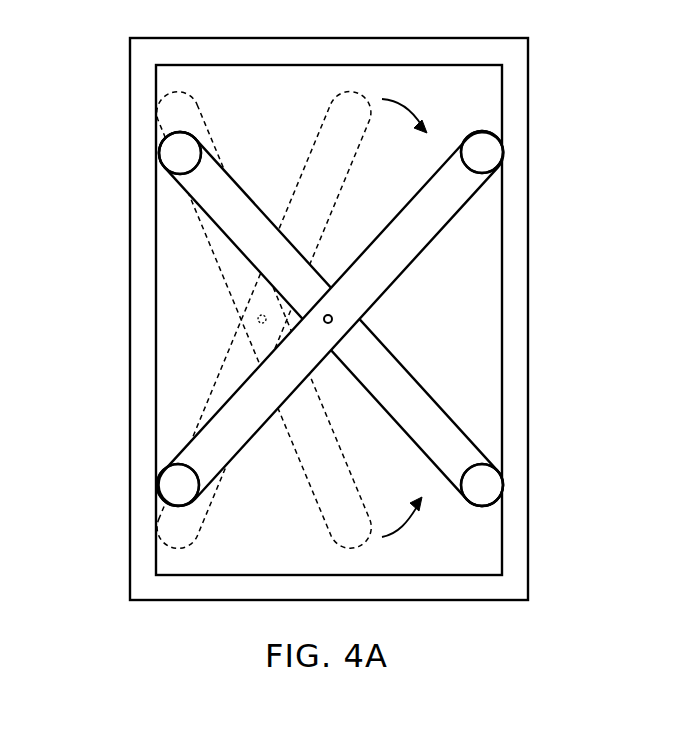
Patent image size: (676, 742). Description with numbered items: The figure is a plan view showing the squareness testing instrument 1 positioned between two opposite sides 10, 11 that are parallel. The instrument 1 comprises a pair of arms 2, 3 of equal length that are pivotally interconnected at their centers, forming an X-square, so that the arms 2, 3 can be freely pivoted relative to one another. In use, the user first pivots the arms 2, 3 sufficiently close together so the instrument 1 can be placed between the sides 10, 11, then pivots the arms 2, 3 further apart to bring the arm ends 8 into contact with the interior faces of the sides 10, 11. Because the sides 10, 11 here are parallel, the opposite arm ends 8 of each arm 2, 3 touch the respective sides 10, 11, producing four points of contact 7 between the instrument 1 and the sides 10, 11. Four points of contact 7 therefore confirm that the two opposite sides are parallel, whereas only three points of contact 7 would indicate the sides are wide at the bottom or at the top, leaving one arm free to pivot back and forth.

The squareness testing instrument 1 is at (360, 236).
The arm 2 is at (390, 288).
The arm 3 is at (395, 357).
The points of contact 7 is at (158, 155).
The arm ends 8 is at (171, 167).
The side 10 is at (157, 293).
The side 11 is at (503, 288).